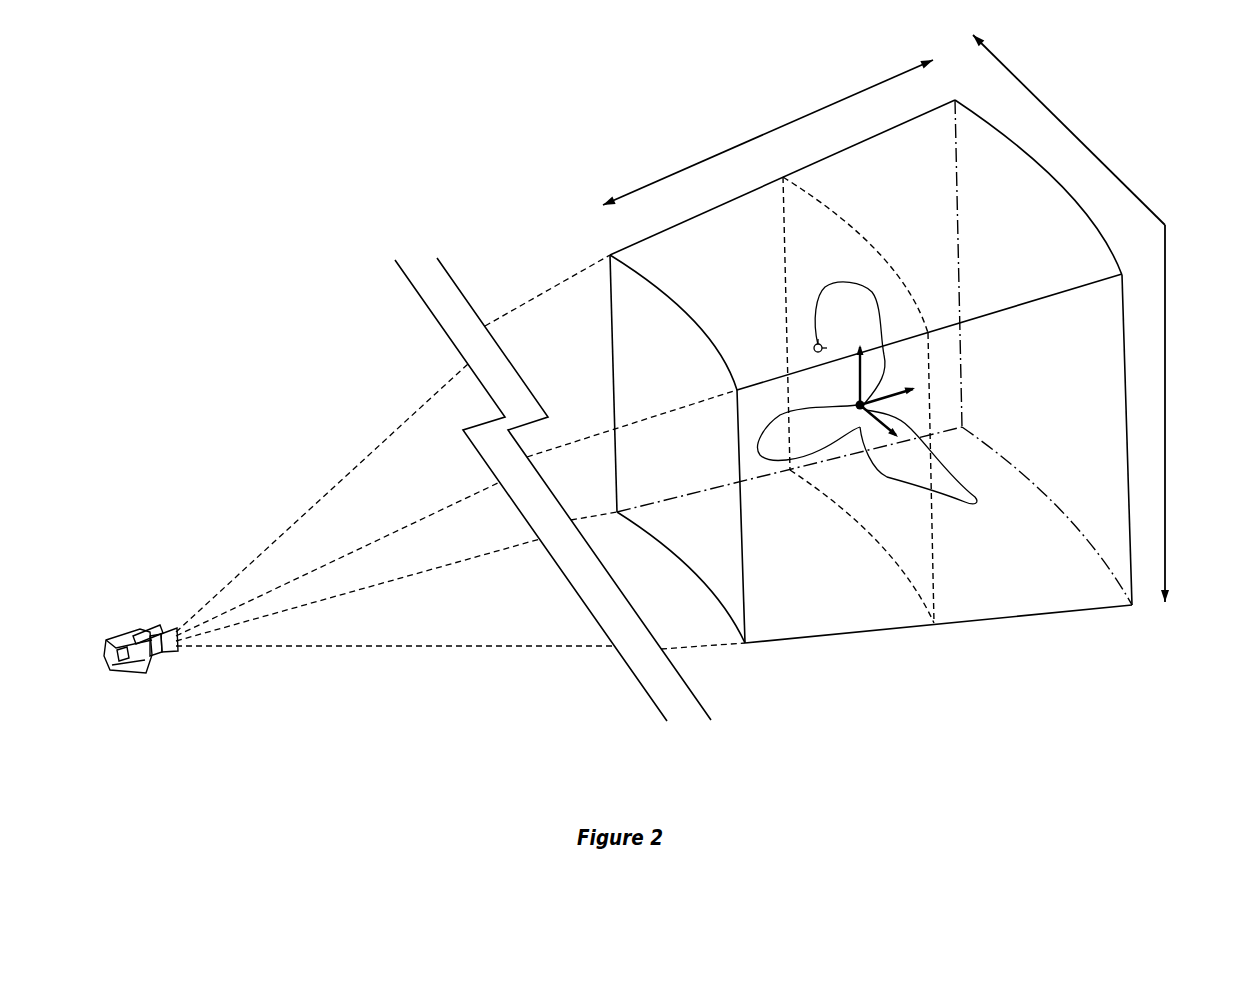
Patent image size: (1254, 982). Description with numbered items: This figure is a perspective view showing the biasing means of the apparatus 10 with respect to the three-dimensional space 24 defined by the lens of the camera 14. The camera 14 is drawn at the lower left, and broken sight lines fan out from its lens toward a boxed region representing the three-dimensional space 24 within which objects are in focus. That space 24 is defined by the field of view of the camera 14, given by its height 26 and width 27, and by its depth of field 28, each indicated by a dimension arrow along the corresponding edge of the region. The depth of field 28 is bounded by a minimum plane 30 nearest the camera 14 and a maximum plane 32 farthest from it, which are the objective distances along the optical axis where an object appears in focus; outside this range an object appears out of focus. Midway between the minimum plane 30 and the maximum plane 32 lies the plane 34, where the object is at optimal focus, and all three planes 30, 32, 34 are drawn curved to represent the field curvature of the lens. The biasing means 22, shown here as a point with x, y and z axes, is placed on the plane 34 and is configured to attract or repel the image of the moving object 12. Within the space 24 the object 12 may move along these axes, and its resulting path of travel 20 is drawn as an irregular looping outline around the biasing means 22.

The apparatus 10 is at (240, 272).
The moving object 12 is at (814, 348).
The camera 14 is at (146, 668).
The path of travel 20 is at (780, 460).
The biasing means 22 is at (858, 410).
The three-dimensional space 24 is at (934, 213).
The height 26 is at (1165, 428).
The width 27 is at (1077, 135).
The depth of field 28 is at (728, 148).
The minimum plane 30 is at (743, 615).
The maximum plane 32 is at (1123, 578).
The plane 34 is at (935, 592).